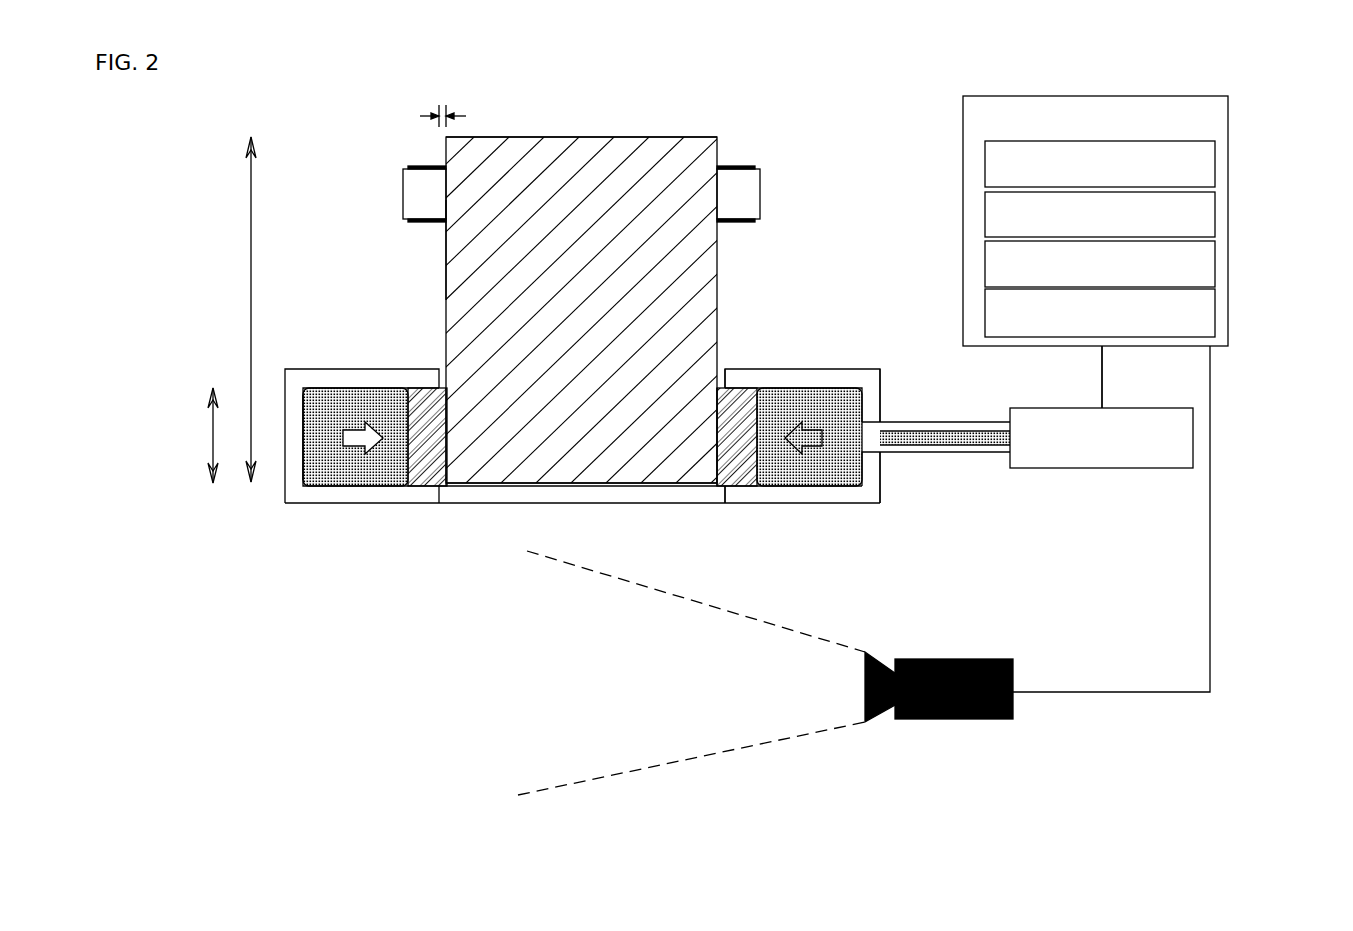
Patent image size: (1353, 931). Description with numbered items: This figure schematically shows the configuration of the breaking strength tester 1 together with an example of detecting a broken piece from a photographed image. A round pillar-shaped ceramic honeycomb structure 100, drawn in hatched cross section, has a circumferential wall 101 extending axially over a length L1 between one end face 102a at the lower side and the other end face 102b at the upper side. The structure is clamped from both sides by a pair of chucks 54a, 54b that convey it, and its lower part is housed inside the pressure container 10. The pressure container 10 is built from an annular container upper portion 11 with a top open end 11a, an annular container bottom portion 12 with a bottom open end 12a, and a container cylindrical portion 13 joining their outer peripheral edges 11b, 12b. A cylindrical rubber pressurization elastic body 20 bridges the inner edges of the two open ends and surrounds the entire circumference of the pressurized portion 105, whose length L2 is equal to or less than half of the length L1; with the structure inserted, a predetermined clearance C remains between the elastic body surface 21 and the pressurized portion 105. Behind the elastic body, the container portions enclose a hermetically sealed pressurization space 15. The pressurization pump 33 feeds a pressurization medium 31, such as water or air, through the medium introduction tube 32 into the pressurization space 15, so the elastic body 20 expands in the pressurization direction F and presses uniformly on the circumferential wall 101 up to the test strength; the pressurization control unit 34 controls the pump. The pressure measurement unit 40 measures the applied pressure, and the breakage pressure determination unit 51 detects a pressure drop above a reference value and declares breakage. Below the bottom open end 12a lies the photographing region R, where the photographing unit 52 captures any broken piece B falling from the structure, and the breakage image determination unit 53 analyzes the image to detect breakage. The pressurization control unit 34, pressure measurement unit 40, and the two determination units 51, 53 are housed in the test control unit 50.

The breaking strength tester 1 is at (905, 168).
The pressure container 10 is at (800, 292).
The honeycomb structure 100 is at (733, 118).
The circumferential wall 101 is at (446, 257).
The one end face 102a is at (518, 488).
The other end face 102b is at (575, 137).
The pressurized portion 105 is at (480, 490).
The container upper portion 11 is at (838, 380).
The top open end 11a is at (723, 372).
The outer peripheral edge 11b is at (880, 378).
The container bottom portion 12 is at (840, 495).
The bottom open end 12a is at (728, 490).
The outer peripheral edge 12b is at (882, 495).
The container cylindrical portion 13 is at (292, 468).
The pressurization space 15 is at (356, 400).
The pressurization elastic body 20 is at (425, 495).
The elastic body surface 21 is at (447, 385).
The pressurization medium 31 is at (318, 400).
The medium introduction tube 32 is at (987, 452).
The pressurization pump 33 is at (1161, 408).
The pressurization control unit 34 is at (1215, 172).
The pressure measurement unit 40 is at (1215, 216).
The test control unit 50 is at (1228, 125).
The breakage pressure determination unit 51 is at (1215, 262).
The photographing unit 52 is at (948, 720).
The breakage image determination unit 53 is at (1215, 312).
The chuck 54a is at (418, 188).
The chuck 54b is at (752, 203).
The broken piece B is at (680, 560).
The clearance C is at (443, 105).
The pressurization direction F is at (378, 400).
The length L1 is at (252, 270).
The length L2 is at (214, 440).
The photographing region R is at (460, 658).